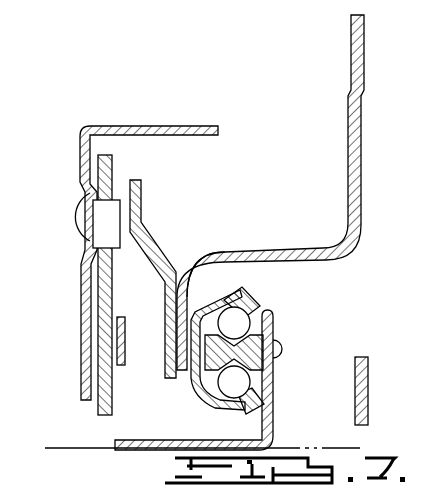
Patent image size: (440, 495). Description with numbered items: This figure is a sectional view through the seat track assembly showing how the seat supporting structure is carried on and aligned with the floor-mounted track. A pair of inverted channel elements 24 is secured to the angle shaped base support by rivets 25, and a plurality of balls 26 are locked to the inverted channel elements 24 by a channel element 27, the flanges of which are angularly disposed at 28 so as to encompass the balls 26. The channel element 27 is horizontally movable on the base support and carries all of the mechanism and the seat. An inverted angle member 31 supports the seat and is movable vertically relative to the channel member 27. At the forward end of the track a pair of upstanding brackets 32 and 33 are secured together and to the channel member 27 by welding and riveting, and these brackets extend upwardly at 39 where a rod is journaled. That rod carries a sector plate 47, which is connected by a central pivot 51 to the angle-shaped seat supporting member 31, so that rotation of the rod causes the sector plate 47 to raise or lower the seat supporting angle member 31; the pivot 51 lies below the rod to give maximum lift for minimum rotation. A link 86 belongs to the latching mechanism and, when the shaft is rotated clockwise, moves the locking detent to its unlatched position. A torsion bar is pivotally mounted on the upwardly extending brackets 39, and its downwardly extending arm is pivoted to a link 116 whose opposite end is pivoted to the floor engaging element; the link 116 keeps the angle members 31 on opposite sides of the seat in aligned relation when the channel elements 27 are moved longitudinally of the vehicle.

The inverted channel elements 24 is at (283, 347).
The rivets 25 is at (274, 366).
The balls 26 is at (253, 313).
The channel element 27 is at (190, 388).
The angularly disposed flanges 28 is at (240, 303).
The inverted angle member 31 is at (82, 186).
The upstanding bracket 32 is at (199, 282).
The upstanding bracket 33 is at (142, 233).
The upwardly extending bracket portion 39 is at (348, 92).
The sector plate 47 is at (103, 298).
The central pivot 51 is at (86, 222).
The link 86 is at (127, 328).
The link 116 is at (367, 357).